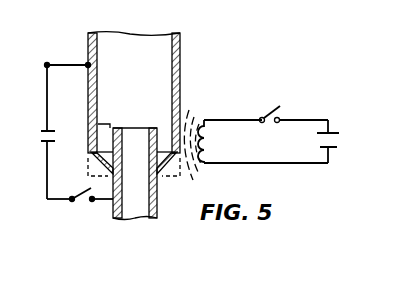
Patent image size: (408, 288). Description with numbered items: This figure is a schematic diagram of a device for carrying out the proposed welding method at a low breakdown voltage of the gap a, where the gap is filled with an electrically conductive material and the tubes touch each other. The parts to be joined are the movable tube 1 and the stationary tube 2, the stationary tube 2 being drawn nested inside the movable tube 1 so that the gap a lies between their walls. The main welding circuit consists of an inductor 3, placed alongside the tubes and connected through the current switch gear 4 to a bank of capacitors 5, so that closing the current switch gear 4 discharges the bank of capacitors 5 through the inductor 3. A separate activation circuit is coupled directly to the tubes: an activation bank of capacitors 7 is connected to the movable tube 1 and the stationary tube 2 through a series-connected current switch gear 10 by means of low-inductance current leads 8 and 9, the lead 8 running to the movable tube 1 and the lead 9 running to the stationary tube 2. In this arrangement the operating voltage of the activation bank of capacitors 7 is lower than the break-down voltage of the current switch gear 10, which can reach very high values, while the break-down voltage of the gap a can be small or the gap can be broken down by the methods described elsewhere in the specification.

The movable tube 1 is at (180, 81).
The stationary tube 2 is at (157, 194).
The inductor 3 is at (263, 141).
The current switch gear 4 is at (272, 110).
The bank of capacitors 5 is at (320, 141).
The activation bank of capacitors 7 is at (55, 136).
The low-inductance current lead 8 is at (72, 62).
The low-inductance current lead 9 is at (104, 203).
The current switch gear 10 is at (82, 191).
The gap a is at (104, 116).